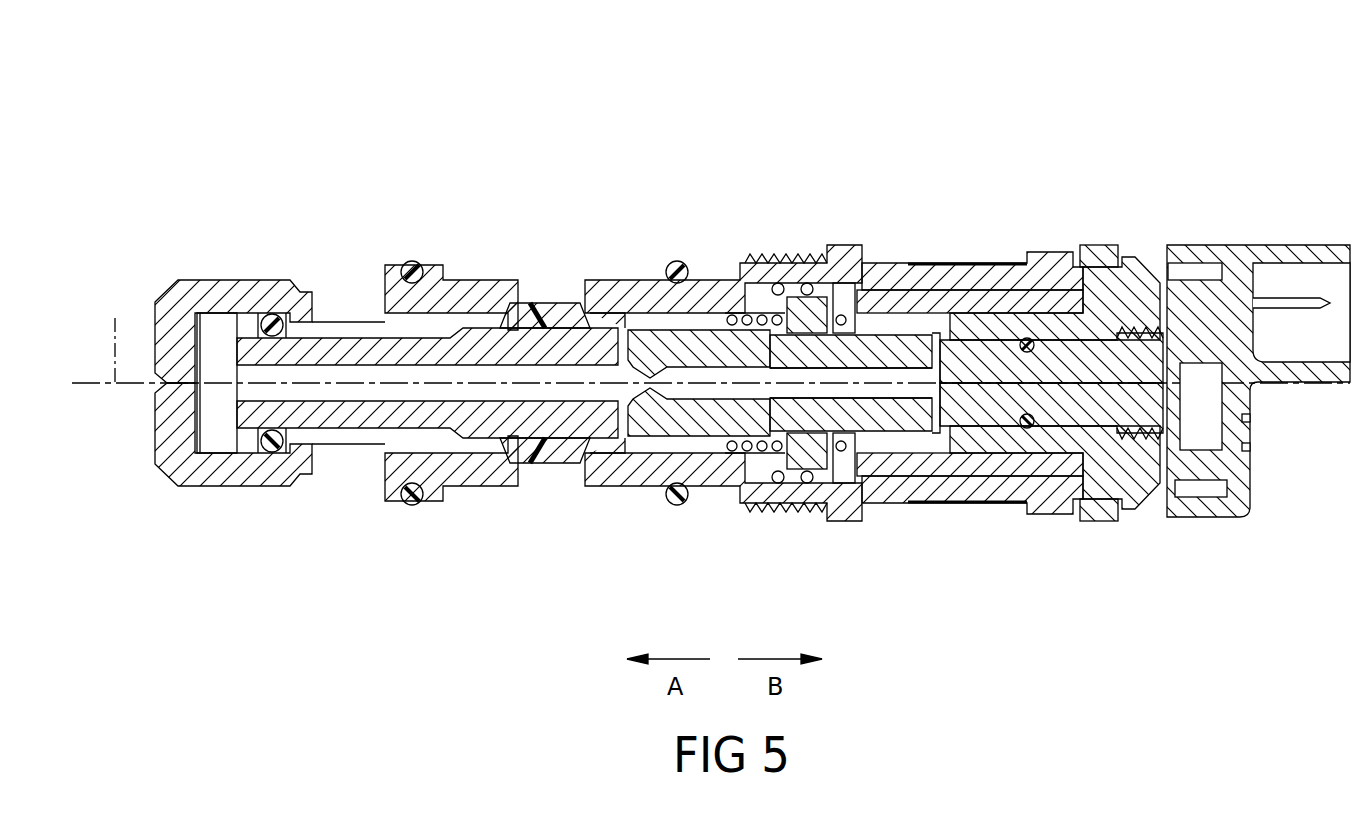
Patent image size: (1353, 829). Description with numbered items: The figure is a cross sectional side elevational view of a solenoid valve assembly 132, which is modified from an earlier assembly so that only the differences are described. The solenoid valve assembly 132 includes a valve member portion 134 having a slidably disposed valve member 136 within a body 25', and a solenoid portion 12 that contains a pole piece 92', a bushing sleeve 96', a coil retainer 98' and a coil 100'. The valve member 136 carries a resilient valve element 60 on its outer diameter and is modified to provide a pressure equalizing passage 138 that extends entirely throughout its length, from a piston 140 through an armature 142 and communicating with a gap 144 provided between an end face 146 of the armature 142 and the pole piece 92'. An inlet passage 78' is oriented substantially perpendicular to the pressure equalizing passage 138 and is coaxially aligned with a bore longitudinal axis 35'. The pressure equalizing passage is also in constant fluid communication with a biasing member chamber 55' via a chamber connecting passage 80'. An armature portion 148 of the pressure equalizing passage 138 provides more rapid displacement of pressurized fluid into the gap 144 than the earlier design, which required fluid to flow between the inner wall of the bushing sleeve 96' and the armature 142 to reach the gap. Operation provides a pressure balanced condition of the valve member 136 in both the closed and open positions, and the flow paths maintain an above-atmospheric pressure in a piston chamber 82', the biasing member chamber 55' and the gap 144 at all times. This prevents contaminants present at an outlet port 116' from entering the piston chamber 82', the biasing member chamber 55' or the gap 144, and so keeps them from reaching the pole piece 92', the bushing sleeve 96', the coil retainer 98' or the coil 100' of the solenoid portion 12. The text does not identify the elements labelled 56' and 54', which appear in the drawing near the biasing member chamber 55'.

The bore longitudinal axis 35' is at (706, 337).
The valve member portion 134 is at (265, 502).
The piston 140 is at (250, 435).
The piston chamber 82' is at (185, 390).
The pressure equalizing passage 138 is at (358, 395).
The outlet port 116' is at (341, 349).
The body 25' is at (477, 421).
The valve member 136 is at (470, 430).
The resilient valve element 60 is at (476, 428).
The chamber connecting passage 80' is at (723, 363).
The solenoid valve assembly 132 is at (838, 174).
The spring 56' is at (714, 426).
The seal rings 54' is at (746, 441).
The biasing member chamber 55' is at (790, 453).
The inlet passage 78' is at (699, 332).
The armature 142 is at (885, 415).
The armature portion 148 is at (876, 372).
The solenoid portion 12 is at (995, 270).
The end face 146 is at (1020, 305).
The gap 144 is at (945, 440).
The bushing sleeve 96' is at (911, 420).
The coil retainer 98' is at (1051, 452).
The pole piece 92' is at (1055, 398).
The coil 100' is at (1199, 364).